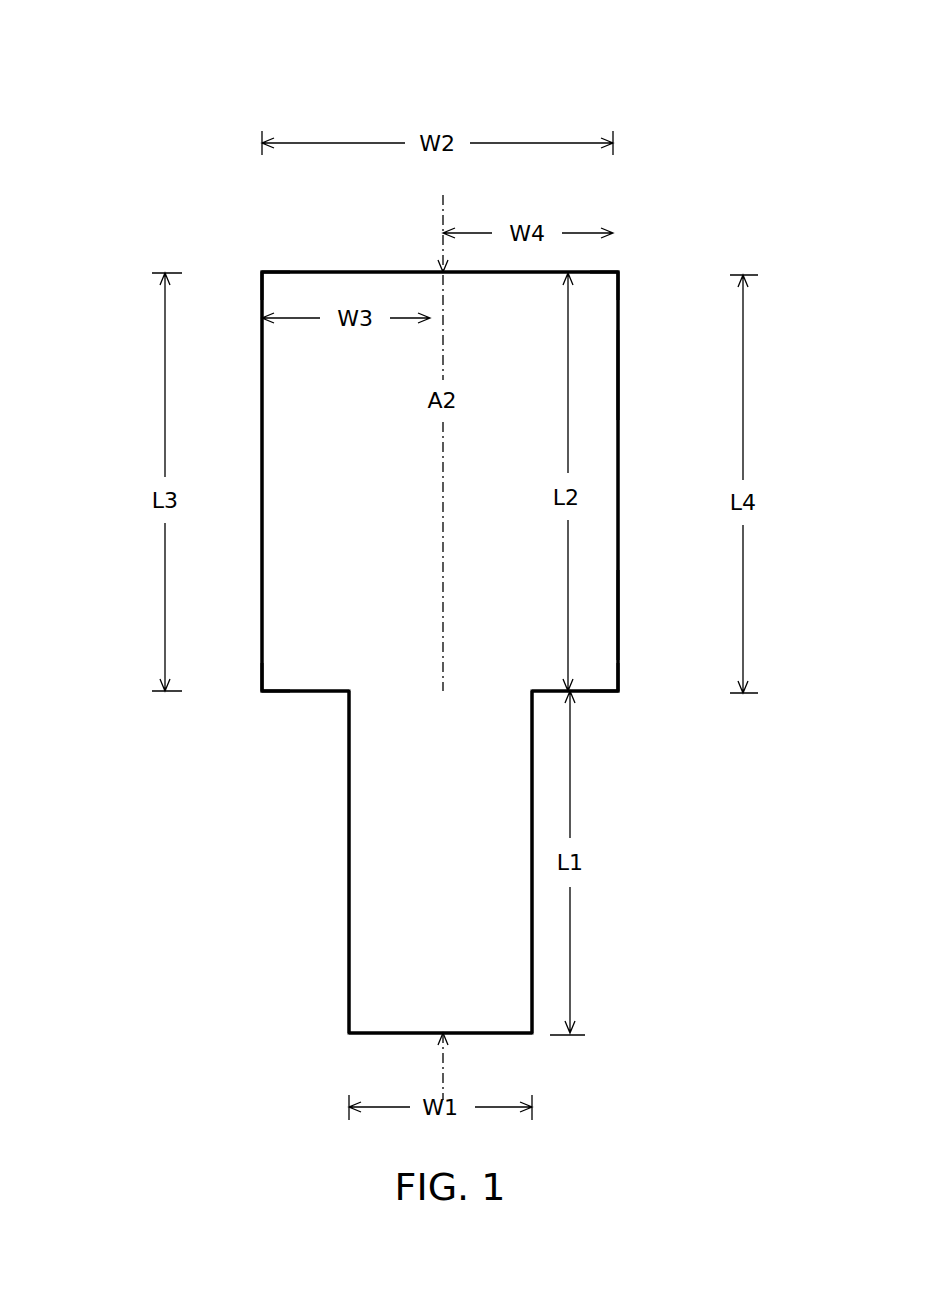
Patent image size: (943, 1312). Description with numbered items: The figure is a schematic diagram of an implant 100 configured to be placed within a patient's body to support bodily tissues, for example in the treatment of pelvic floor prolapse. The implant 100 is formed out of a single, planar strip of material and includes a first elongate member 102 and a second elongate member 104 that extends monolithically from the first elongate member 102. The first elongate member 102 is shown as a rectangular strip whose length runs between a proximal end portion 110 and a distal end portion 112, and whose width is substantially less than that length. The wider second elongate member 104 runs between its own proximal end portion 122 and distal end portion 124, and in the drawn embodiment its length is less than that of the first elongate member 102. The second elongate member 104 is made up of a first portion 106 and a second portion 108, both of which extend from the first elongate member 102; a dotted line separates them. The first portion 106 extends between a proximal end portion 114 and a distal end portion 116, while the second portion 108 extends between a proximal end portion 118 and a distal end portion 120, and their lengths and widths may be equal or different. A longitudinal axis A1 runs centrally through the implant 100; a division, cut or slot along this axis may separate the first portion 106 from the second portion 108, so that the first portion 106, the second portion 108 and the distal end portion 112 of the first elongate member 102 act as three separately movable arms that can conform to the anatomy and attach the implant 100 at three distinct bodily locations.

The implant 100 is at (99, 88).
The first elongate member 102 is at (347, 895).
The second elongate member 104 is at (390, 268).
The first portion 106 is at (262, 513).
The second portion 108 is at (618, 448).
The proximal end portion 110 is at (349, 705).
The distal end portion 112 is at (349, 1033).
The proximal end portion 114 is at (262, 273).
The distal end portion 116 is at (262, 690).
The proximal end portion 118 is at (618, 273).
The distal end portion 120 is at (618, 691).
The proximal end portion 122 is at (618, 368).
The distal end portion 124 is at (618, 612).
The longitudinal axis A1 is at (443, 218).